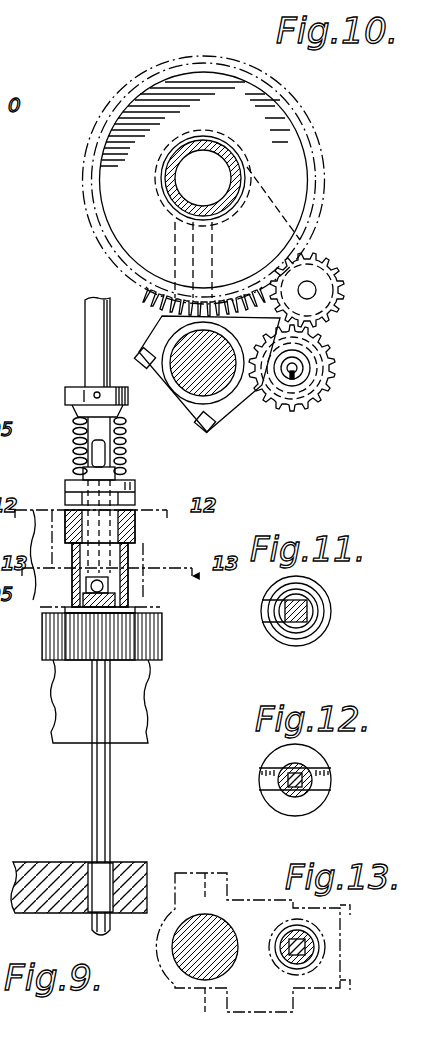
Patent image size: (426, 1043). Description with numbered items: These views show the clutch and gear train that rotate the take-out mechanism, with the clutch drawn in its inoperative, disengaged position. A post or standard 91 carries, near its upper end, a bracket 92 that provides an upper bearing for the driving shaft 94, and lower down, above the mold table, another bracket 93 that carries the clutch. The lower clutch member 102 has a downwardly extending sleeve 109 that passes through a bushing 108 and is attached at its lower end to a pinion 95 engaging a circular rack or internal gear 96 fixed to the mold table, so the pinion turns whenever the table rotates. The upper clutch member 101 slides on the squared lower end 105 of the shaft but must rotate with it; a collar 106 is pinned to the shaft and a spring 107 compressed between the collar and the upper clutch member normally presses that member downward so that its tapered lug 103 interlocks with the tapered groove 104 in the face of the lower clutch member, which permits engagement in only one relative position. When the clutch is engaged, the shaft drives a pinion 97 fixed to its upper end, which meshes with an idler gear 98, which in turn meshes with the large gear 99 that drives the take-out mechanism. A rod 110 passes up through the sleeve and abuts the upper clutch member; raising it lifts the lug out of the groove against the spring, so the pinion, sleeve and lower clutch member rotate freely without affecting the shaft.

In FIG. 10, the post or standard 91 is at (213, 392).
In FIG. 13, the post or standard 91 is at (180, 945).
In FIG. 10, the bracket 92 is at (177, 307).
In FIG. 9, the bracket 93 is at (143, 580).
In FIG. 13, the bracket 93 is at (297, 993).
In FIG. 9, the driving shaft 94 is at (86, 352).
In FIG. 9, the pinion 95 is at (117, 640).
In FIG. 9, the circular rack or internal gear 96 is at (47, 633).
In FIG. 10, the pinion 97 is at (330, 368).
In FIG. 10, the idler gear 98 is at (323, 315).
In FIG. 10, the large gear 99 is at (317, 211).
In FIG. 9, the upper clutch member 101 is at (65, 486).
In FIG. 12, the upper clutch member 101 is at (290, 768).
In FIG. 13, the upper clutch member 101 is at (310, 950).
In FIG. 9, the lower clutch member 102 is at (128, 548).
In FIG. 9, the lug 103 is at (133, 493).
In FIG. 11, the lug 103 is at (330, 598).
In FIG. 9, the groove 104 is at (128, 520).
In FIG. 12, the groove 104 is at (331, 780).
In FIG. 9, the squared portion of shaft 105 is at (105, 458).
In FIG. 12, the squared portion of shaft 105 is at (287, 792).
In FIG. 13, the squared portion of shaft 105 is at (298, 950).
In FIG. 9, the collar 106 is at (65, 390).
In FIG. 9, the spring 107 is at (126, 436).
In FIG. 9, the bushing 108 is at (128, 595).
In FIG. 13, the bushing 108 is at (323, 940).
In FIG. 9, the sleeve 109 is at (117, 580).
In FIG. 13, the sleeve 109 is at (317, 938).
In FIG. 9, the rod 110 is at (110, 785).